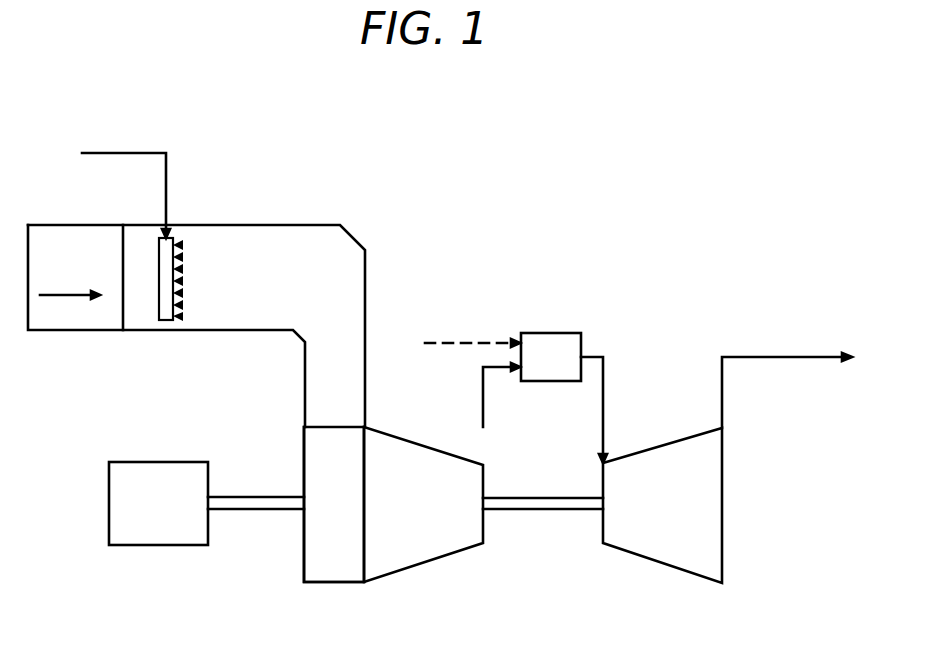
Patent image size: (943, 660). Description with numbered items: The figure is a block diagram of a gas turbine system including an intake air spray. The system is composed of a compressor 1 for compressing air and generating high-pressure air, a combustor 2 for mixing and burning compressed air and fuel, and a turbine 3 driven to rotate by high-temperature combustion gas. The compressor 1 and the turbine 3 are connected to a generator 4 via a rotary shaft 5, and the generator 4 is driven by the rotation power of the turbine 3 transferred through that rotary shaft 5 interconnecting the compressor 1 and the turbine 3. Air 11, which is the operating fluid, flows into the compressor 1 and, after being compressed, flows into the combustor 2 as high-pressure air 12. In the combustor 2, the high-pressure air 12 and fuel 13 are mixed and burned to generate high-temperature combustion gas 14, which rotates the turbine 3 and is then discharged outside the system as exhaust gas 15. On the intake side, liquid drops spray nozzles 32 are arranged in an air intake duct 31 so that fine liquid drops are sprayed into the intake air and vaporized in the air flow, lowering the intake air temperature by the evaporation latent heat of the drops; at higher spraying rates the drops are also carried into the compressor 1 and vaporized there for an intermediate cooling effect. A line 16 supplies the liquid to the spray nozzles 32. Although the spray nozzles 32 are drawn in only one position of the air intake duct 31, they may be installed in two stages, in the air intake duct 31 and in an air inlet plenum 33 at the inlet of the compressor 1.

The compressor 1 is at (393, 504).
The combustor 2 is at (551, 357).
The turbine 3 is at (662, 505).
The generator 4 is at (206, 503).
The rotary shaft 5 is at (553, 510).
The air 11 is at (72, 294).
The high-pressure air 12 is at (483, 422).
The fuel 13 is at (463, 343).
The combustion gas 14 is at (603, 402).
The exhaust gas 15 is at (802, 355).
The fuel supply line 16 is at (135, 152).
The air intake duct 31 is at (263, 223).
The liquid drops spray nozzles 32 is at (183, 290).
The air inlet plenum 33 is at (303, 547).